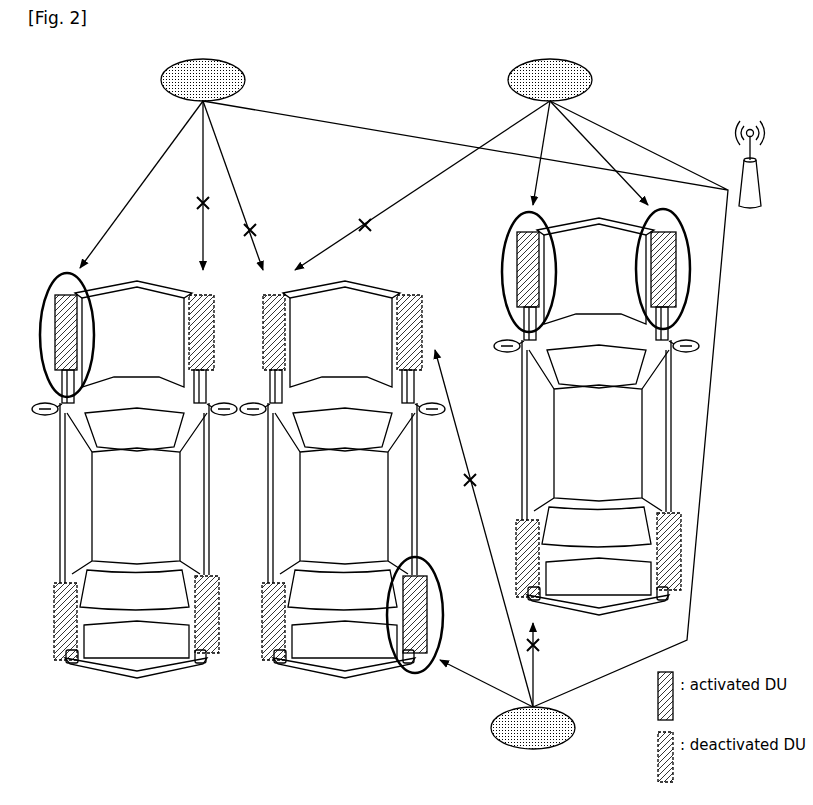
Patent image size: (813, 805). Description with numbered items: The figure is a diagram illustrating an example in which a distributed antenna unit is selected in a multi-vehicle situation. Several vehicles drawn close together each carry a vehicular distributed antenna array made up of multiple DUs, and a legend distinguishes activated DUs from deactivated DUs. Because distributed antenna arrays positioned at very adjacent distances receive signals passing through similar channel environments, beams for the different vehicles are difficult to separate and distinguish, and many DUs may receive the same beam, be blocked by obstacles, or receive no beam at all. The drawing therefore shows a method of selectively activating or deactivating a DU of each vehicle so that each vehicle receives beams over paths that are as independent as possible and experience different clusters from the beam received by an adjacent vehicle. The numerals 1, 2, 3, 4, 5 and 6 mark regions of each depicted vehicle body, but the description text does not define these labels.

The roof 1 is at (367, 474).
The trunk 2 is at (367, 608).
The hood 3 is at (364, 311).
The window glass 4 is at (365, 477).
The door 5 is at (368, 462).
The bumper 6 is at (367, 448).